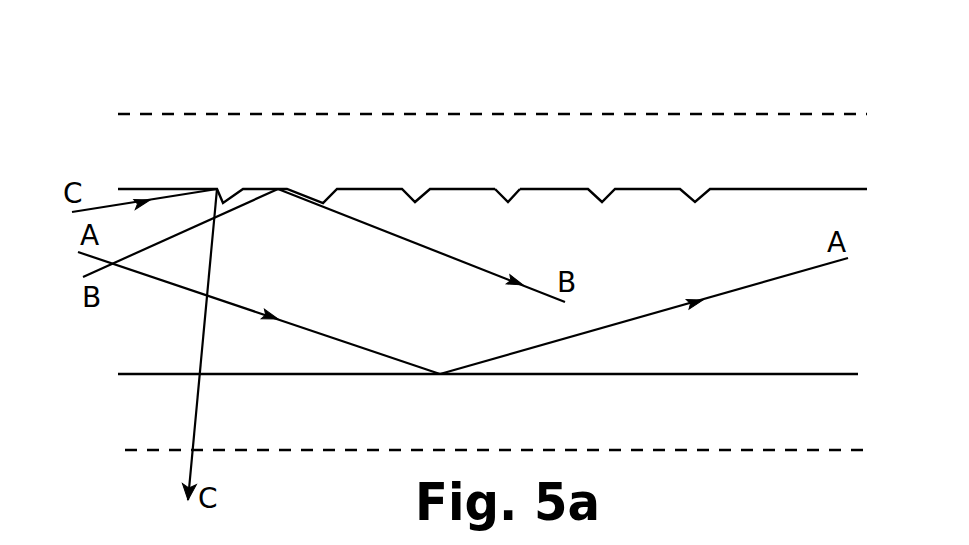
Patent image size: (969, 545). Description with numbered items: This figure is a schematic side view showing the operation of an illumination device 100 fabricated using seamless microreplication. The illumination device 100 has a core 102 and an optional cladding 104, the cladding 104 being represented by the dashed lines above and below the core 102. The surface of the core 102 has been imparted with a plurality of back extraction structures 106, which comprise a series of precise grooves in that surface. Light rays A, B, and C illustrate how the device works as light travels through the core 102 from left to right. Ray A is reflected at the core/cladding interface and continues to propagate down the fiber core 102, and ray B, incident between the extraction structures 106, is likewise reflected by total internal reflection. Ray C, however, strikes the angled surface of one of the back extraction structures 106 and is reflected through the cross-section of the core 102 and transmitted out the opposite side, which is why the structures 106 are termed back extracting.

The illumination device 100 is at (506, 228).
The core 102 is at (492, 213).
The cladding 104 is at (827, 153).
The back extraction structures 106 is at (521, 190).